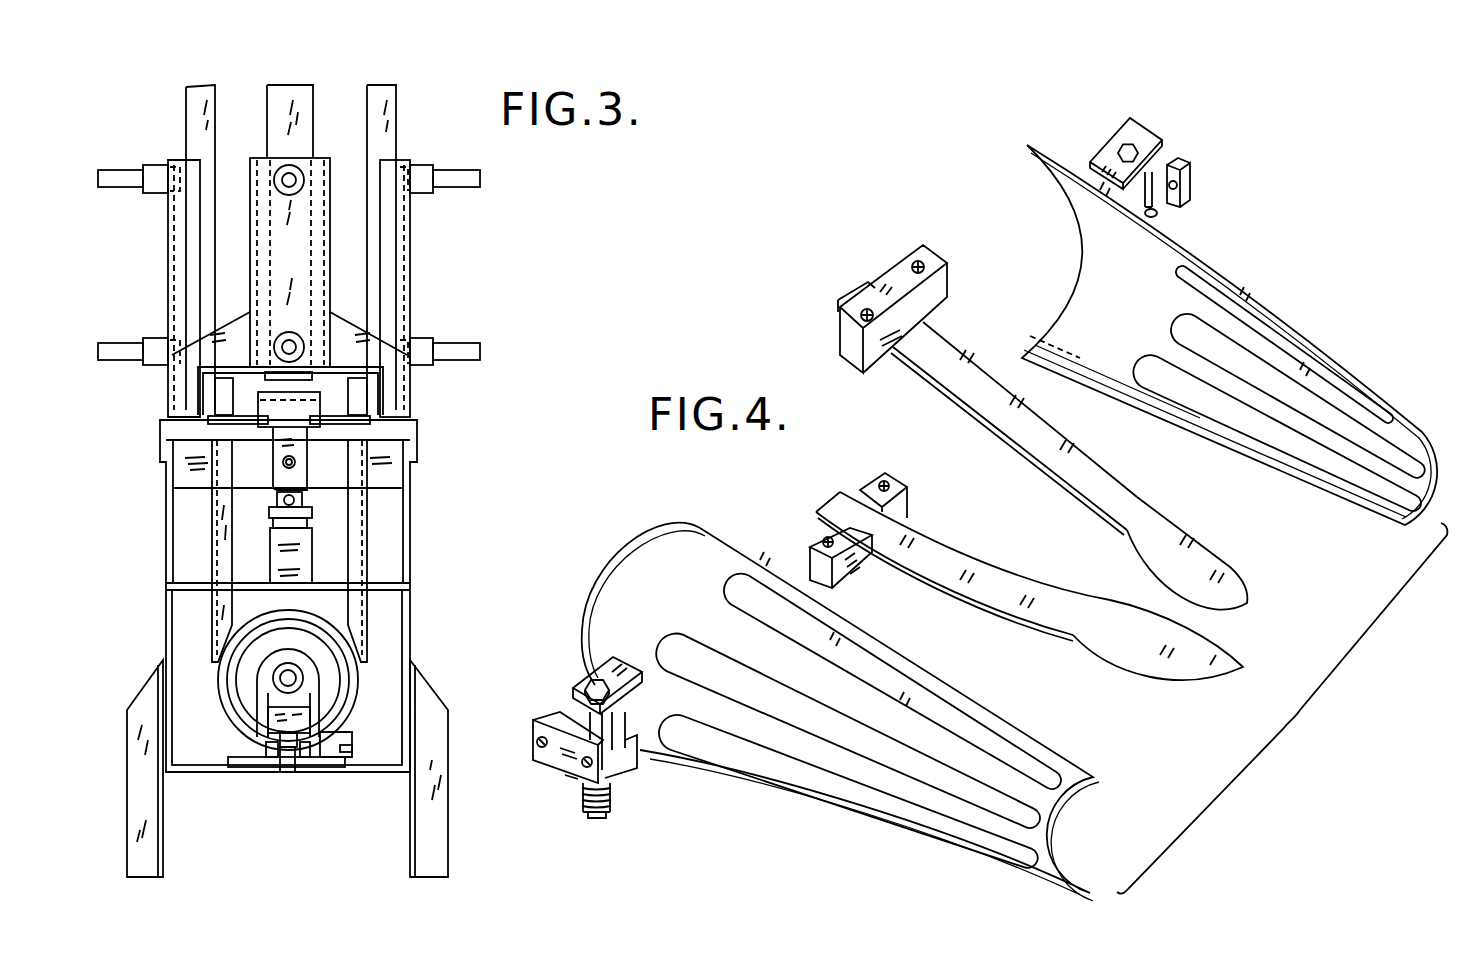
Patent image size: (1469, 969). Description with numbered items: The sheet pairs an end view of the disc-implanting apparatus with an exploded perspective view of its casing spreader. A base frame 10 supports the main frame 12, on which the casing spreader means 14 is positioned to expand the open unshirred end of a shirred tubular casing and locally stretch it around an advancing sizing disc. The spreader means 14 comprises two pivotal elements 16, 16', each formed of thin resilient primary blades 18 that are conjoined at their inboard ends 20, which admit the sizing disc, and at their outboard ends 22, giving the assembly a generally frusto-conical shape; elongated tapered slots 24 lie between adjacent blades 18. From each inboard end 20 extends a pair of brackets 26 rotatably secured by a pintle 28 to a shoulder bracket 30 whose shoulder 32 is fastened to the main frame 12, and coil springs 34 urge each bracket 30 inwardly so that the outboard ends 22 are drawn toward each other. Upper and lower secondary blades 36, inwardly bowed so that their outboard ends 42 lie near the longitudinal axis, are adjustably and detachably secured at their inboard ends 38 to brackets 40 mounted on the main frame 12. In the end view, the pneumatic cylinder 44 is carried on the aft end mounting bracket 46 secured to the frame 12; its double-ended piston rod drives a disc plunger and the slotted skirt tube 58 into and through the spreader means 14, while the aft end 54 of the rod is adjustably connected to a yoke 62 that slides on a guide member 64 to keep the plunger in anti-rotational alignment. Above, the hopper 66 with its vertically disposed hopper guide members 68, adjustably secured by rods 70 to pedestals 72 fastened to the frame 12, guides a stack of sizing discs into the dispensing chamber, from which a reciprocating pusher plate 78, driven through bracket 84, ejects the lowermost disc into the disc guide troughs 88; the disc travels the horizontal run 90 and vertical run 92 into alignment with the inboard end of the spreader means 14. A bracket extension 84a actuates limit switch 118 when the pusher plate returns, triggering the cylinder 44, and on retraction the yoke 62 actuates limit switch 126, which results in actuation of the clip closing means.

In FIG. 3, the base frame 10 is at (402, 835).
In FIG. 3, the main frame 12 is at (256, 780).
In FIG. 4, the casing spreader means 14 is at (1295, 317).
In FIG. 4, the pivotal element 16 is at (529, 657).
In FIG. 4, the pivotal element 16' is at (1082, 110).
In FIG. 4, the primary blades 18 is at (1310, 405).
In FIG. 4, the inboard ends 20 is at (617, 568).
In FIG. 4, the outboard ends 22 is at (1434, 436).
In FIG. 4, the slots 24 is at (1332, 470).
In FIG. 4, the brackets 26 is at (623, 667).
In FIG. 4, the pintle 28 is at (592, 684).
In FIG. 4, the shoulder bracket 30 is at (560, 774).
In FIG. 4, the shoulder 32 is at (534, 731).
In FIG. 4, the coil springs 34 is at (613, 793).
In FIG. 4, the secondary blades 36 is at (1244, 576).
In FIG. 4, the inboard ends 38 is at (850, 294).
In FIG. 4, the brackets 40 is at (892, 281).
In FIG. 4, the outboard ends 42 is at (1246, 607).
In FIG. 3, the pneumatic cylinder 44 is at (288, 652).
In FIG. 3, the aft end mounting bracket 46 is at (263, 663).
In FIG. 3, the aft end 54 is at (279, 679).
In FIG. 3, the slotted skirt tube 58 is at (227, 716).
In FIG. 3, the yoke 62 is at (300, 720).
In FIG. 3, the guide member 64 is at (288, 772).
In FIG. 3, the hopper 66 is at (399, 100).
In FIG. 3, the hopper guide members 68 is at (203, 93).
In FIG. 3, the rods 70 is at (118, 180).
In FIG. 3, the pedestals 72 is at (176, 253).
In FIG. 3, the pusher plate 78 is at (305, 395).
In FIG. 3, the bracket 84 is at (285, 437).
In FIG. 3, the bracket extension 84a is at (303, 488).
In FIG. 3, the disc guide troughs 88 is at (223, 515).
In FIG. 3, the horizontal run 90 is at (222, 393).
In FIG. 3, the vertical run 92 is at (355, 553).
In FIG. 3, the limit switch 118 is at (293, 502).
In FIG. 3, the limit switch 126 is at (333, 753).